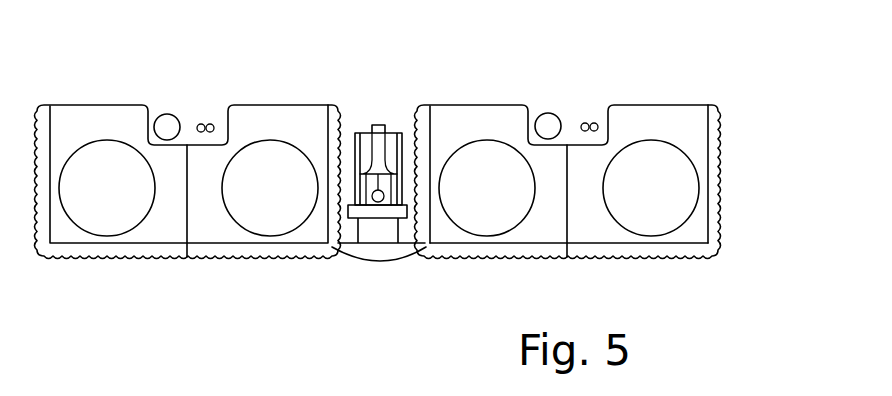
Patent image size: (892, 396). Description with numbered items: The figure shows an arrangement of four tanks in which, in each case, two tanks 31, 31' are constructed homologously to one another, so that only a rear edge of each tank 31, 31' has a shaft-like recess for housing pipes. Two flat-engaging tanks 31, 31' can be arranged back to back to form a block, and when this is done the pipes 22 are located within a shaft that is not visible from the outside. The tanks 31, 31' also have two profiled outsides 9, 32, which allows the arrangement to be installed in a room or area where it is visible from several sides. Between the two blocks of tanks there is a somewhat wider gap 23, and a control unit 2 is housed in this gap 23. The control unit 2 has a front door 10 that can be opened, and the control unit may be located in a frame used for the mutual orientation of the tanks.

The control unit 2 is at (381, 128).
The profiled outside 9 is at (652, 248).
The front door 10 is at (375, 253).
The pipes 22 is at (167, 114).
The gap 23 is at (348, 138).
The tank 31 is at (655, 123).
The tank 31' is at (498, 130).
The profiled outside 32 is at (723, 172).